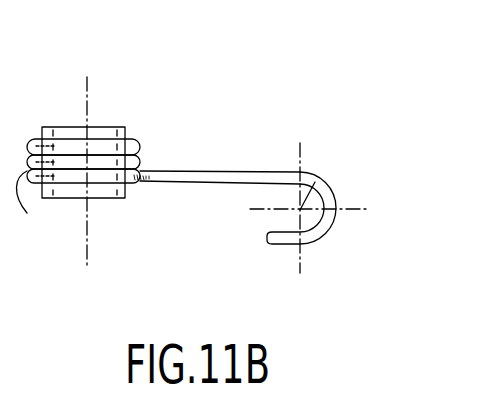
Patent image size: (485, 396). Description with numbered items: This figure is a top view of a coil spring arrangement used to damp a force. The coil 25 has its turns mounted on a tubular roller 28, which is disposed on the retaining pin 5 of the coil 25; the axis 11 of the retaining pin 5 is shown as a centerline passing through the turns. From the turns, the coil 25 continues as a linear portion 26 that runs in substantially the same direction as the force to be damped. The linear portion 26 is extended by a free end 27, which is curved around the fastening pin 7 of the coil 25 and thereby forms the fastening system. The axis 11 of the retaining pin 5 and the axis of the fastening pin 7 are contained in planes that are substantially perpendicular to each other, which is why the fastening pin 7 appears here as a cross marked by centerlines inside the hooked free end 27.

The axis 11 is at (86, 96).
The retaining pin 5 is at (99, 123).
The coil 25 is at (30, 214).
The tubular roller 28 is at (100, 191).
The linear portion 26 is at (202, 183).
The free end 27 is at (322, 226).
The fastening pin 7 is at (322, 172).